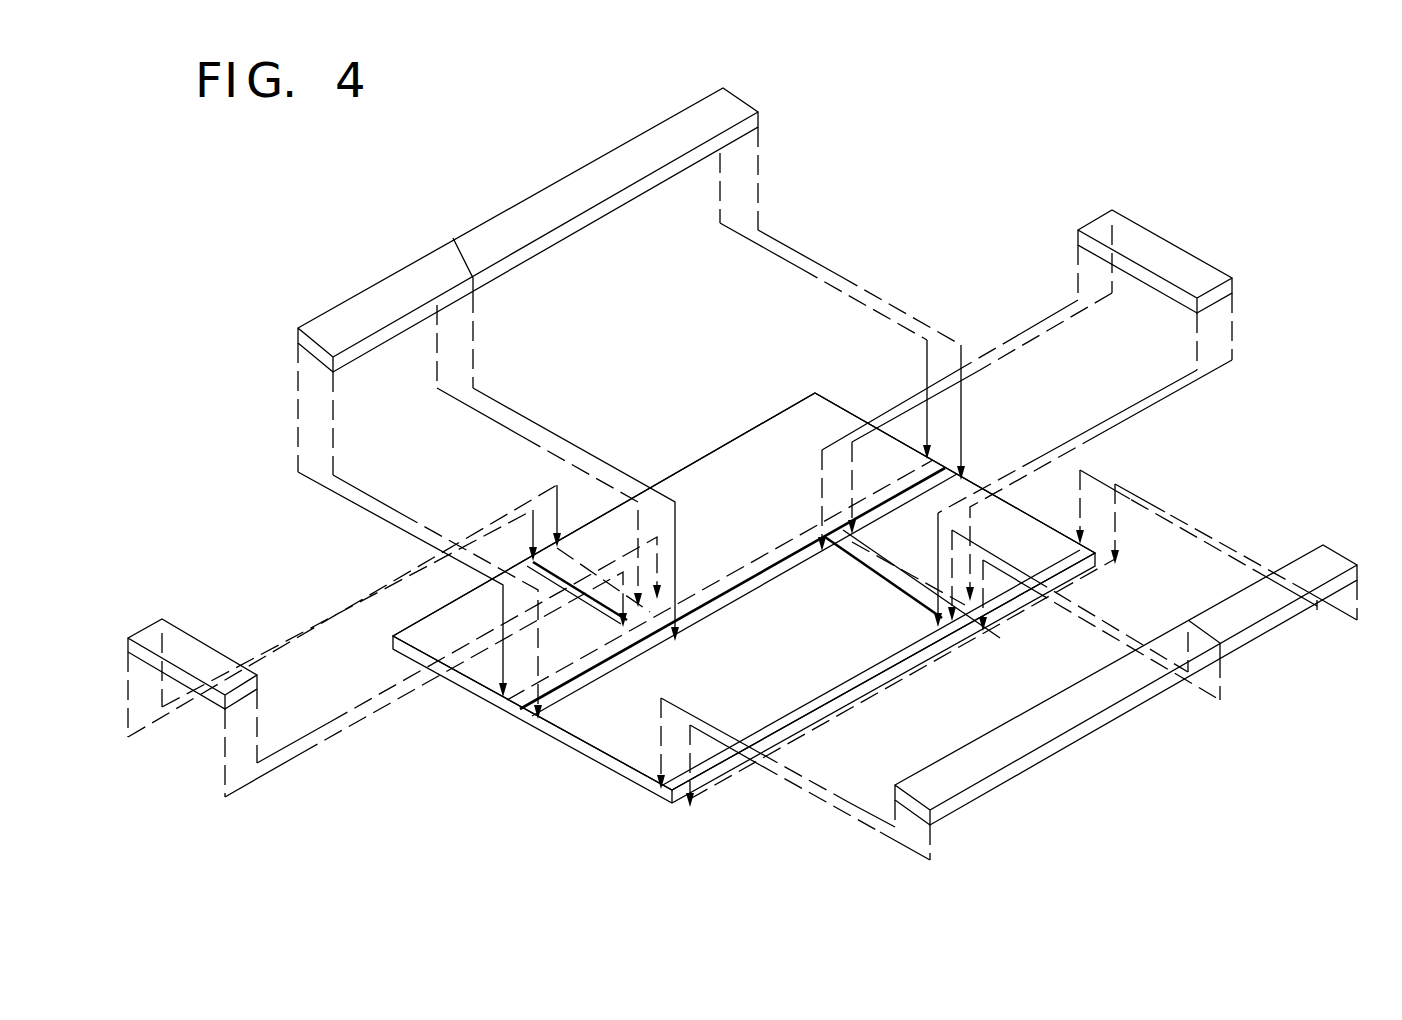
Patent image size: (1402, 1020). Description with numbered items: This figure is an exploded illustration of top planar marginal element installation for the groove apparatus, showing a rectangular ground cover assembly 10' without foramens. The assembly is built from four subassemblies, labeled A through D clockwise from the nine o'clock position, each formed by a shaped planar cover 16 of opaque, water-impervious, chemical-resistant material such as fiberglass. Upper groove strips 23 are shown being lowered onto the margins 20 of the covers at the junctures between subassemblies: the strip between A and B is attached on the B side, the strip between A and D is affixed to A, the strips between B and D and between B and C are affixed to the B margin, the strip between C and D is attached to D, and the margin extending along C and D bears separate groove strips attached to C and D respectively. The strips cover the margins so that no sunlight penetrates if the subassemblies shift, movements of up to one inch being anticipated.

The rectangular ground cover assembly 10' is at (744, 584).
The planar cover 16 is at (765, 495).
The margin 20 is at (555, 562).
The upper groove strip 23 is at (465, 252).